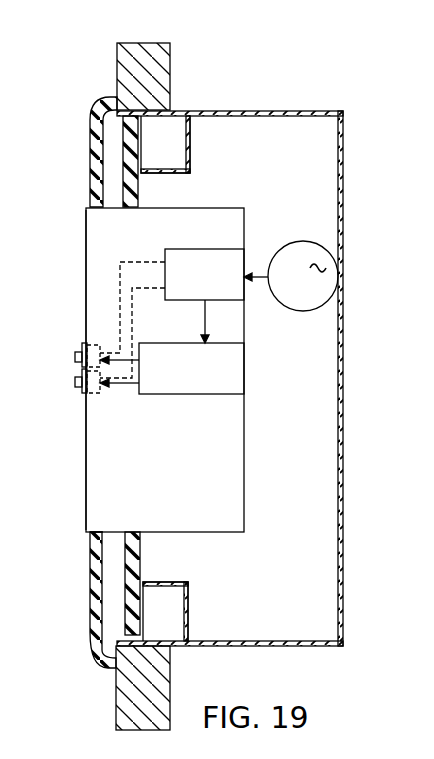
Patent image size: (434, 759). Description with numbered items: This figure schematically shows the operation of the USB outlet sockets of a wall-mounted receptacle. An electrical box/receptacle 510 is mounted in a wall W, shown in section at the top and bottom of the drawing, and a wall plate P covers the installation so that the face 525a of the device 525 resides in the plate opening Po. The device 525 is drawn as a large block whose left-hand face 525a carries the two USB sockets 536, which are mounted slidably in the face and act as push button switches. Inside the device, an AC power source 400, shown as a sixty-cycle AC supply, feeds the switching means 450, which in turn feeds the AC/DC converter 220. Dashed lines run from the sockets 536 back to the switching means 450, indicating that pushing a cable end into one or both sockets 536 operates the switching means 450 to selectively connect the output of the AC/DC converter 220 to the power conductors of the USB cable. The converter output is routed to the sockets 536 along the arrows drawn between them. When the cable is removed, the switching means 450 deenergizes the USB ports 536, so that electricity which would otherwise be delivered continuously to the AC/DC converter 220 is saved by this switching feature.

The wall W is at (117, 73).
The electrical box/receptacle 510 is at (285, 111).
The device 525 is at (203, 208).
The face of the device 525a is at (86, 268).
The switching means 450 is at (195, 249).
The AC power source 400 is at (300, 241).
The AC/DC converter 220 is at (180, 395).
The sockets 536 is at (75, 356).
The plate opening Po is at (87, 531).
The wall plate P is at (90, 597).